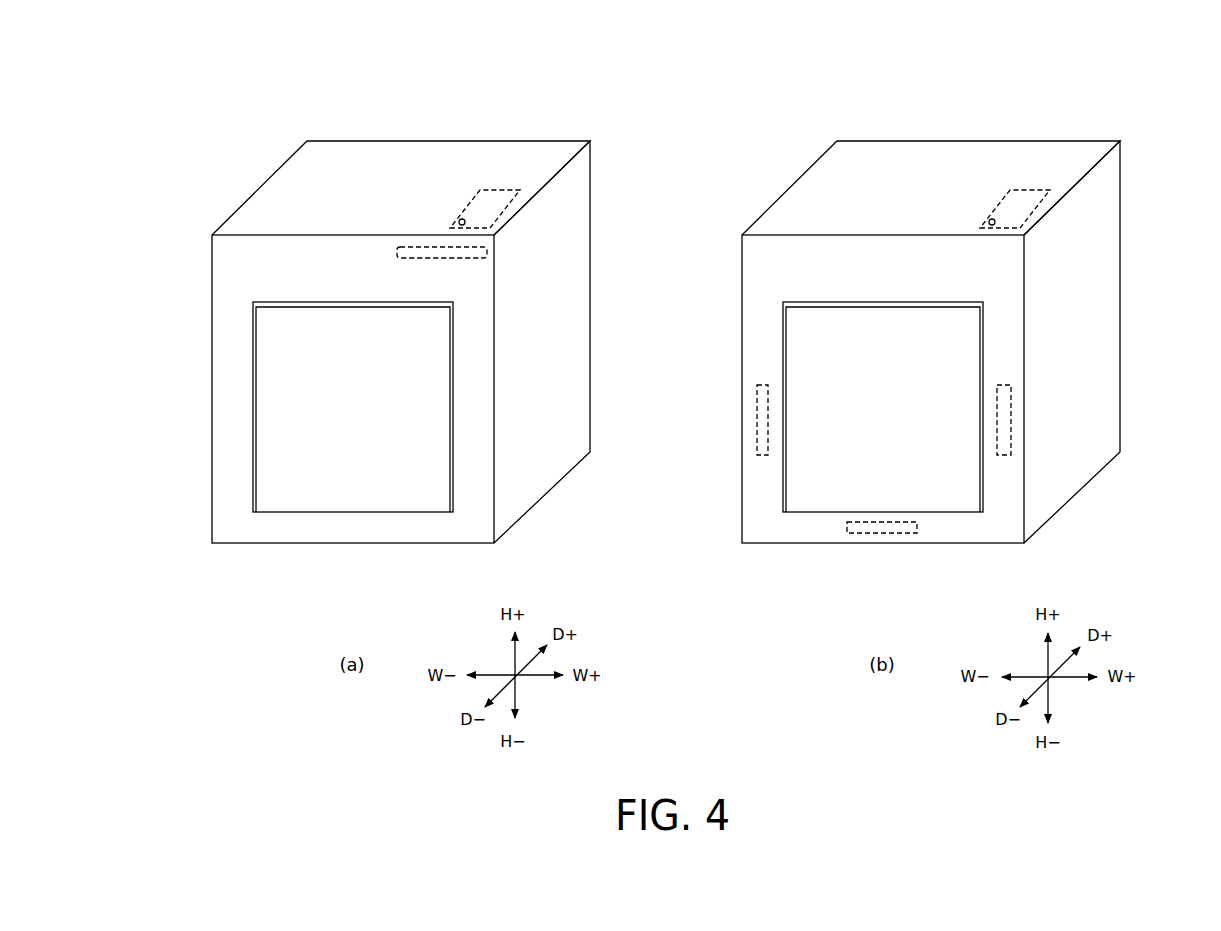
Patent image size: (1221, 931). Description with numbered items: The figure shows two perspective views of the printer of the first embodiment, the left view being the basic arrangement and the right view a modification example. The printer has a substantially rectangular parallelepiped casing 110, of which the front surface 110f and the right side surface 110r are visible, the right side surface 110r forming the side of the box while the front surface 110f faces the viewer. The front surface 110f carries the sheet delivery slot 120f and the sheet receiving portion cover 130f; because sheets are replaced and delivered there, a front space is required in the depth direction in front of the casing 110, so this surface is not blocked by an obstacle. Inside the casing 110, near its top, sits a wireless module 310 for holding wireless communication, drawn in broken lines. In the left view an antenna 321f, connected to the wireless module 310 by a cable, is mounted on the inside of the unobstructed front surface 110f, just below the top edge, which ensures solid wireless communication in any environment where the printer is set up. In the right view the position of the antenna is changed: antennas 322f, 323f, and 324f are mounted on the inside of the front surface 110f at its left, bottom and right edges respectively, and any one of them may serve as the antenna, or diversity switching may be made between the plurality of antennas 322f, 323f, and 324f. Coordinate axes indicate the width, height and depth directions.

The casing 110 is at (662, 317).
The front surface 110f is at (238, 357).
The right side surface 110r is at (543, 377).
The sheet delivery slot 120f is at (355, 300).
The sheet receiving portion cover 130f is at (356, 420).
The wireless module 310 is at (480, 190).
The antenna 321f is at (487, 252).
The antenna 322f is at (757, 443).
The antenna 323f is at (918, 529).
The antenna 324f is at (1011, 440).